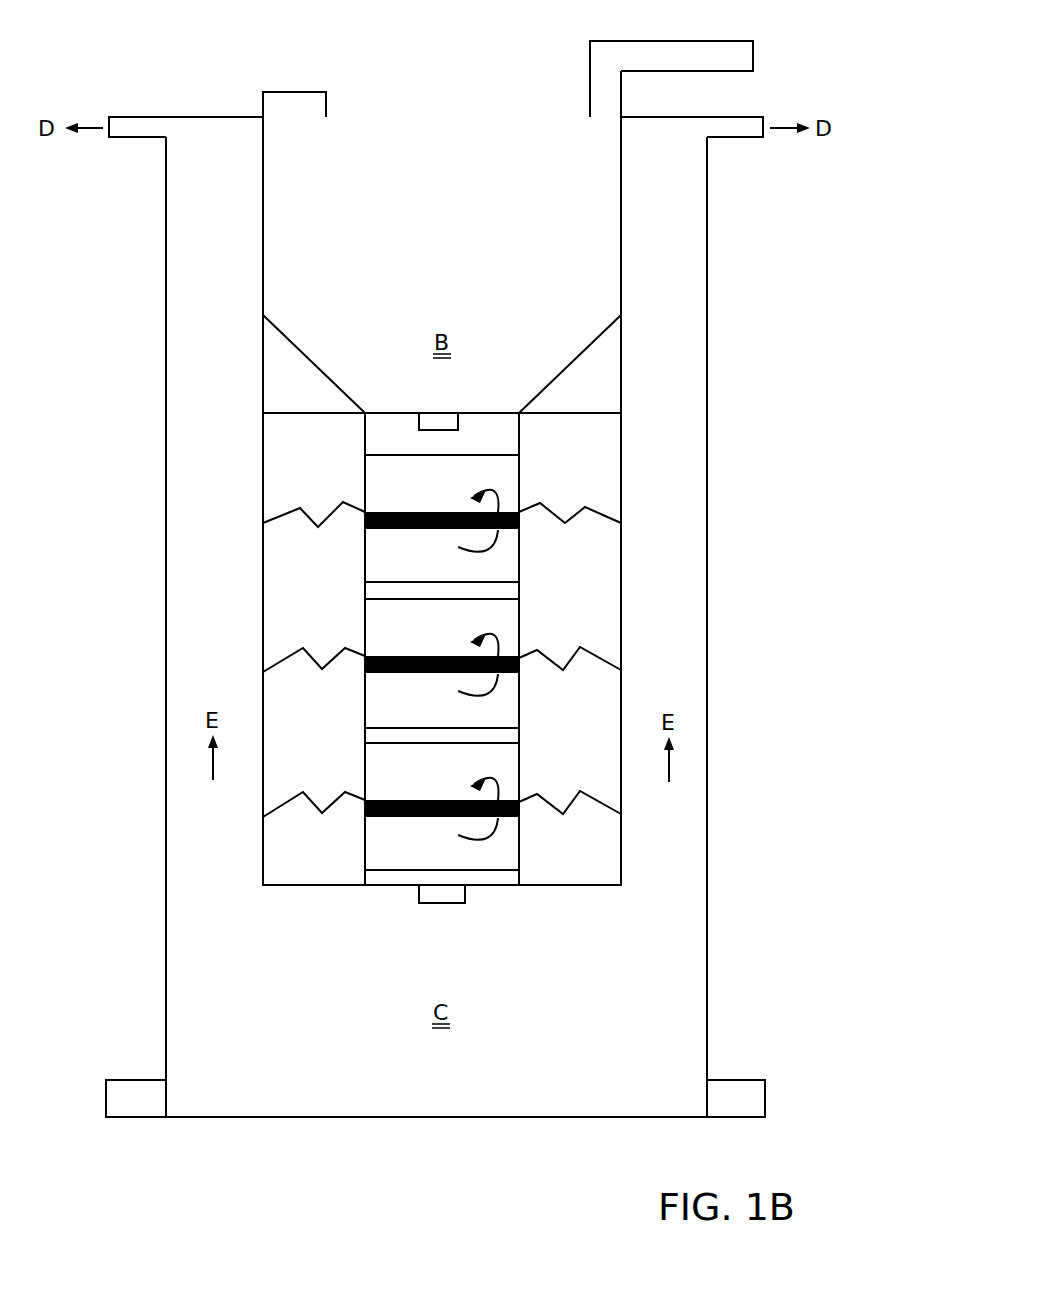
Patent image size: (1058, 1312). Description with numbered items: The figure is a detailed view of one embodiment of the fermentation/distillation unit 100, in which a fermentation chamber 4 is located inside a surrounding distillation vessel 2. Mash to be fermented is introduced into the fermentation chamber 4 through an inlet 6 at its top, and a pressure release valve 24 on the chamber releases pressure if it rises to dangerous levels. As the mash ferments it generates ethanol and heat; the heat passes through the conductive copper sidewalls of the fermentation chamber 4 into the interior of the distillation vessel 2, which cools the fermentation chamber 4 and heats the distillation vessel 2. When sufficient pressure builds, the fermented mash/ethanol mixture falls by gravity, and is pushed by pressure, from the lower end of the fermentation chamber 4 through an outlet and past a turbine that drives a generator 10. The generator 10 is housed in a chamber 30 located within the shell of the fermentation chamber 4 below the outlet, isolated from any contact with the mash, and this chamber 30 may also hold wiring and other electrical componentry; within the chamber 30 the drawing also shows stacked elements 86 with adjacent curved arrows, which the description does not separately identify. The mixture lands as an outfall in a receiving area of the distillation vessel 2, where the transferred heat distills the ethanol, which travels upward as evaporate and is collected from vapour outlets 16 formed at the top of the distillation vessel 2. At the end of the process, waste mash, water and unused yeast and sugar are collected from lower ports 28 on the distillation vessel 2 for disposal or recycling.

The fermentation/distillation unit 100 is at (817, 176).
The distillation vessel 2 is at (707, 957).
The fermentation chamber 4 is at (624, 226).
The inlet 6 is at (694, 41).
The vapour outlet 16 is at (137, 117).
The pressure release valve 24 is at (303, 92).
The lower port 28 is at (130, 1080).
The chamber 30 is at (616, 467).
The generator 10 is at (565, 523).
The membrane 86 is at (393, 512).